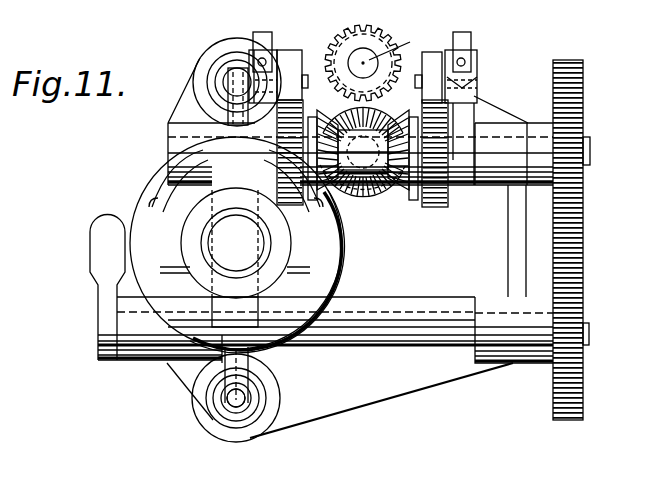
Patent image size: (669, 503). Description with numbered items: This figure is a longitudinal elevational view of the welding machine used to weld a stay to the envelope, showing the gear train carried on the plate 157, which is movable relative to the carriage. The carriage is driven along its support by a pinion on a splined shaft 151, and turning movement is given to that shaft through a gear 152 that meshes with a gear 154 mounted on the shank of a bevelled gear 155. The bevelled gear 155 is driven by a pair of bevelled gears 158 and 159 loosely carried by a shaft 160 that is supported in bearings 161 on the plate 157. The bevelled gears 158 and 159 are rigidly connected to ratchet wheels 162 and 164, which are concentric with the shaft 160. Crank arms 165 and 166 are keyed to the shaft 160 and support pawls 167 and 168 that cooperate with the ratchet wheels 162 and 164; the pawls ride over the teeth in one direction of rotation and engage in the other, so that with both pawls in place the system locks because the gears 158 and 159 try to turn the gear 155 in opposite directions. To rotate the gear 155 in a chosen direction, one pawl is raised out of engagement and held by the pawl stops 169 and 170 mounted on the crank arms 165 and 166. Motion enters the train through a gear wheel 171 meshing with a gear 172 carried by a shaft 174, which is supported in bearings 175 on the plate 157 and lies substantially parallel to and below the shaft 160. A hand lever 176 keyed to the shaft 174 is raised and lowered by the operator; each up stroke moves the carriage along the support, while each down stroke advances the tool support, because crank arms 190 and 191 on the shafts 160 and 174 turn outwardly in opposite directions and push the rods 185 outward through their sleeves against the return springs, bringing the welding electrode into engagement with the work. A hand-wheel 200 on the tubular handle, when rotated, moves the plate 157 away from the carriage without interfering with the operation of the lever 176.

The splined shaft 151 is at (404, 43).
The gear 152 is at (373, 35).
The gear 154 is at (428, 66).
The bevelled gear 155 is at (368, 205).
The plate 157 is at (433, 381).
The bevelled gear 158 is at (388, 204).
The bevelled gear 159 is at (333, 195).
The shaft 160 is at (591, 152).
The bearings 161 is at (170, 128).
The ratchet wheel 162 is at (474, 97).
The ratchet wheel 164 is at (286, 127).
The crank arm 165 is at (477, 78).
The crank arm 166 is at (271, 50).
The pawl 167 is at (477, 62).
The pawl 168 is at (294, 58).
The pawl stop 169 is at (471, 40).
The pawl stop 170 is at (266, 27).
The gear wheel 171 is at (584, 212).
The gear 172 is at (585, 391).
The shaft 174 is at (386, 336).
The bearings 175 is at (188, 361).
The hand lever 176 is at (100, 262).
The rods 185 is at (213, 72).
The crank arm 190 is at (226, 88).
The crank arm 191 is at (239, 398).
The hand-wheel 200 is at (150, 192).